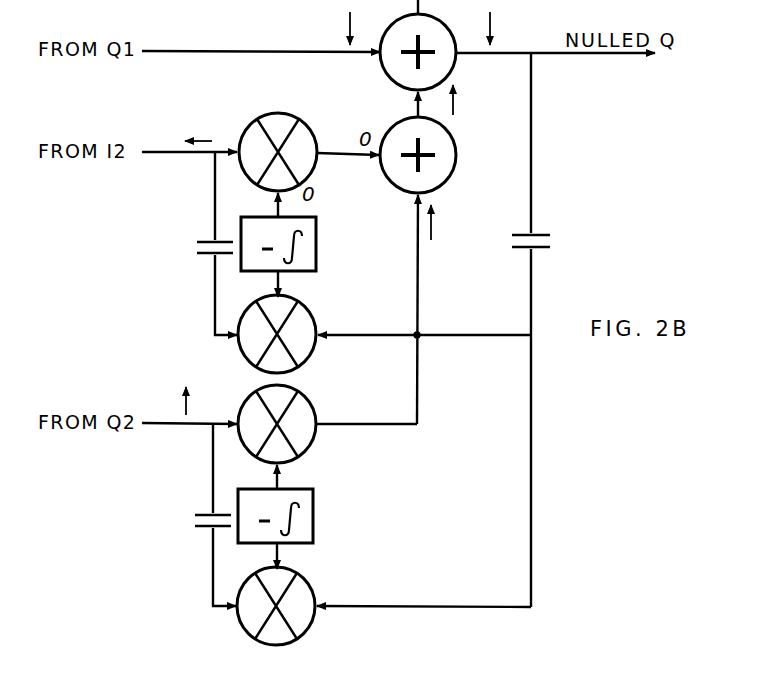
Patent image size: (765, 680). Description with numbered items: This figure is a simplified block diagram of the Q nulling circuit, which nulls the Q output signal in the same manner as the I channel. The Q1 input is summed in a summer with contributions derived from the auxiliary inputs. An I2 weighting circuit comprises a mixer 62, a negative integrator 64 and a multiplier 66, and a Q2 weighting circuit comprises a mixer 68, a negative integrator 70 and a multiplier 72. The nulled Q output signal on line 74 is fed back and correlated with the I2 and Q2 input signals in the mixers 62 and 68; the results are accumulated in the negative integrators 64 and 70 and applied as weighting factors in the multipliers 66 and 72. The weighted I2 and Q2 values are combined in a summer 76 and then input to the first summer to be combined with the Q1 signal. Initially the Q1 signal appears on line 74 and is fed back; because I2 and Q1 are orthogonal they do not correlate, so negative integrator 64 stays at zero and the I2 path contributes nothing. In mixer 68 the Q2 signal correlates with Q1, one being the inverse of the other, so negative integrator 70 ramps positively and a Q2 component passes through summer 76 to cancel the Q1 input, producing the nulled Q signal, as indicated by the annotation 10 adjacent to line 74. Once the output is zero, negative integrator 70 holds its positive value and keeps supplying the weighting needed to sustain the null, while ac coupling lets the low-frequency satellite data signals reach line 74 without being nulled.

The summing circuit 10 is at (457, 45).
The mixer 62 is at (303, 364).
The negative integrator 64 is at (316, 245).
The multiplier 66 is at (280, 113).
The mixer 68 is at (302, 637).
The negative integrator 70 is at (313, 518).
The multiplier 72 is at (303, 455).
The output line 74 is at (595, 55).
The summer 76 is at (456, 158).